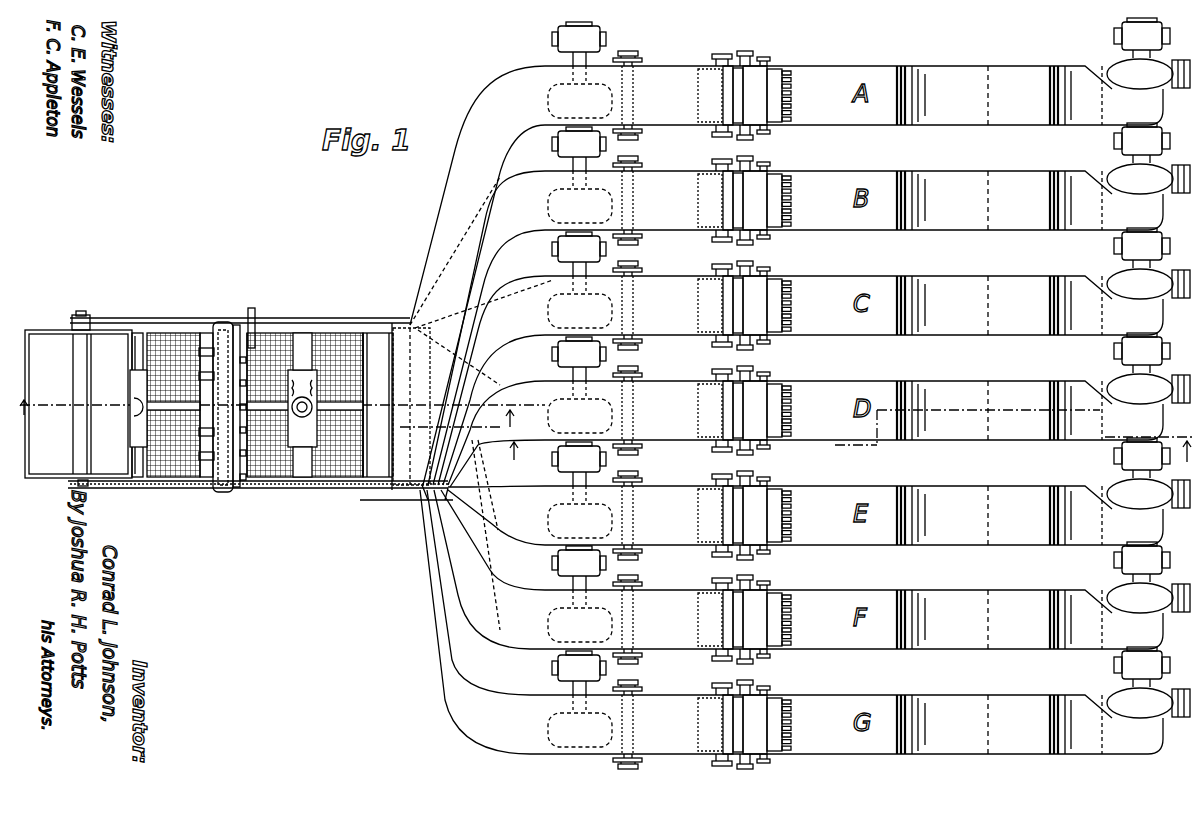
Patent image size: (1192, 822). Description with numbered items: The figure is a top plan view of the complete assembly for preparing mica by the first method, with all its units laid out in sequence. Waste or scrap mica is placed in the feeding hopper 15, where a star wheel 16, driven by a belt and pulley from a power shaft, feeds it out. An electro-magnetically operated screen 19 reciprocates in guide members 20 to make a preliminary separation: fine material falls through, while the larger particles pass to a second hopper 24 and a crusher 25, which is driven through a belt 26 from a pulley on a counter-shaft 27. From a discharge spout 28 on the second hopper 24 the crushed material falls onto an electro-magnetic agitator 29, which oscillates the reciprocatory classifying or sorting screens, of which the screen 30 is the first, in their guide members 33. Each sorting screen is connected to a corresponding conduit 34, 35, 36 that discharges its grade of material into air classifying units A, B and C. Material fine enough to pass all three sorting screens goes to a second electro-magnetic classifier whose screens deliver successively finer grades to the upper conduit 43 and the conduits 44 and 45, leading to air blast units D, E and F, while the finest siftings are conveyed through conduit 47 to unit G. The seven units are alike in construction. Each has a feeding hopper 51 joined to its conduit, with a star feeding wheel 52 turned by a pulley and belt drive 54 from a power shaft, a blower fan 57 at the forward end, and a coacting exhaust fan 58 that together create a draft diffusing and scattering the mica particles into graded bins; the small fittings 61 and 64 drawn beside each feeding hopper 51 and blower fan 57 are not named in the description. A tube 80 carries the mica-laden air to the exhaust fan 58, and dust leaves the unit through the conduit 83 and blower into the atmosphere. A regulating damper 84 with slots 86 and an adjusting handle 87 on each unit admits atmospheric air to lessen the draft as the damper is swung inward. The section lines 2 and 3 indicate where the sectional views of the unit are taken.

The section line 2- 2 is at (267, 446).
The section line 3- 3 is at (850, 441).
The feeding hopper 15 is at (46, 332).
The star wheel 16 is at (74, 407).
The electro-magnetically operated screen 19 is at (139, 344).
The guide members 20 is at (170, 333).
The second hopper 24 is at (215, 335).
The crusher 25 is at (230, 323).
The belt 26 is at (258, 316).
The counter-shaft 27 is at (303, 370).
The discharge spout 28 is at (250, 462).
The electro-magnetic agitator 29 is at (303, 467).
The classifying or sorting screen 30 is at (340, 468).
The guide members 33 is at (377, 481).
The conduit 34 is at (382, 340).
The conduit 35 is at (486, 328).
The conduit 36 is at (491, 380).
The upper conduit 43 is at (496, 434).
The conduit 44 is at (496, 515).
The conduit 45 is at (489, 569).
The conduit 47 is at (482, 622).
The feeding hopper 51 is at (698, 396).
The star feeding wheel 52 is at (720, 740).
The pulley and belt drive 54 is at (727, 398).
The blower fan 57 is at (567, 384).
The exhaust fan 58 is at (1140, 388).
The bolt 61 is at (756, 396).
The flange 64 is at (627, 397).
The tube 80 is at (984, 410).
The conduit 83 is at (1133, 421).
The regulating damper 84 is at (794, 409).
The slots 86 is at (802, 410).
The adjusting handle 87 is at (776, 401).